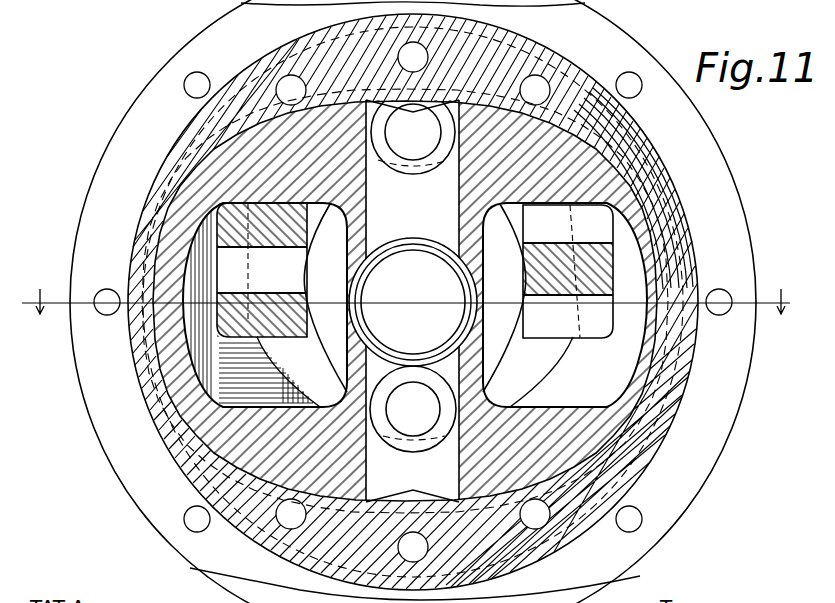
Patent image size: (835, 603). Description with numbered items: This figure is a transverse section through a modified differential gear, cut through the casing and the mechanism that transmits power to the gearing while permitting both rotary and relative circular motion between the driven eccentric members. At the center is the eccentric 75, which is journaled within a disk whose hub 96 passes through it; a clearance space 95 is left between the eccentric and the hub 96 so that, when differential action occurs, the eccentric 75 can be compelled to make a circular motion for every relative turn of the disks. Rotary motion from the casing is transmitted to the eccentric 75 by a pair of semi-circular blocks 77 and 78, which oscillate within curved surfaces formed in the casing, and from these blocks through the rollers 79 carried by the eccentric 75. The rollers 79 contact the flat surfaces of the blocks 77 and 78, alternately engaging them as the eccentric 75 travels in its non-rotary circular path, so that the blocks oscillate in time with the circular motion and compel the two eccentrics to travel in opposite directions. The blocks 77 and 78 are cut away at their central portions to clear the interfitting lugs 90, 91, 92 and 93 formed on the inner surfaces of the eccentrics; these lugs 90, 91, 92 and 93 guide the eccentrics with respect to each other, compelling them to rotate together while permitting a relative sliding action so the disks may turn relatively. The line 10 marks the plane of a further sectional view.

The section line 10— 10 is at (409, 315).
The eccentric 75 is at (315, 352).
The semi-circular block 77 is at (205, 181).
The semi-circular block 78 is at (610, 158).
The rollers 79 is at (421, 172).
The interfitting lug 90 is at (287, 240).
The interfitting lug 91 is at (561, 228).
The interfitting lug 92 is at (590, 271).
The interfitting lug 93 is at (290, 275).
The clearance space 95 is at (503, 290).
The hub 96 is at (406, 238).